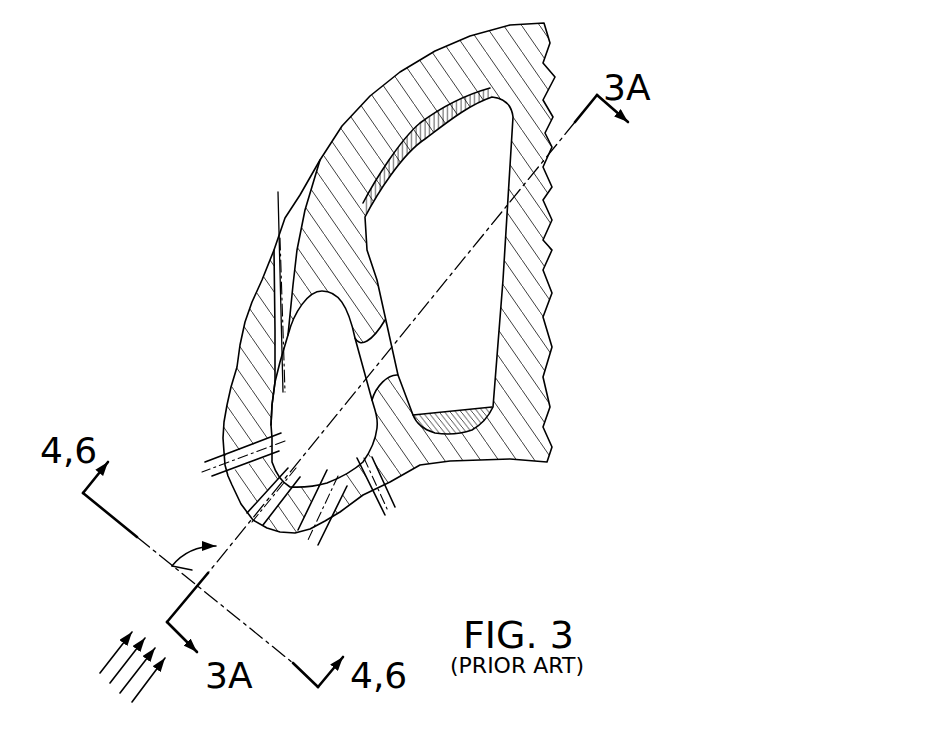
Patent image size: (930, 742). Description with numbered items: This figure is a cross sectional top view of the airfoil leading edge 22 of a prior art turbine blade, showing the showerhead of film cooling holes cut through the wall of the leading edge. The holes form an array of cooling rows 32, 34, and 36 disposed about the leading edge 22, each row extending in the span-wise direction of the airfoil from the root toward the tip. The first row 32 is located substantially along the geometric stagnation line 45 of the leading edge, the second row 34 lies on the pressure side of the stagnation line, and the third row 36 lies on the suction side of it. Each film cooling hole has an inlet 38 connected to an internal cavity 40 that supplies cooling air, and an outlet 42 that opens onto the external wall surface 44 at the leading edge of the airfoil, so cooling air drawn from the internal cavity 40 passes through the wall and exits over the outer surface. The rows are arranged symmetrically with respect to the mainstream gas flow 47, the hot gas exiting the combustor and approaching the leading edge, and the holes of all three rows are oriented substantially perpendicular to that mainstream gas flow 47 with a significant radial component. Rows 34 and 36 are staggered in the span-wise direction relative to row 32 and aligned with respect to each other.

The leading edge 22 is at (192, 570).
The first row 32 is at (256, 528).
The second row 34 is at (372, 520).
The third row 36 is at (223, 465).
The inlet 38 is at (273, 436).
The internal cavity 40 is at (337, 401).
The outlet 42 is at (222, 472).
The external wall surface 44 is at (292, 533).
The geometric stagnation line 45 is at (242, 526).
The mainstream gas flow 47 is at (110, 660).